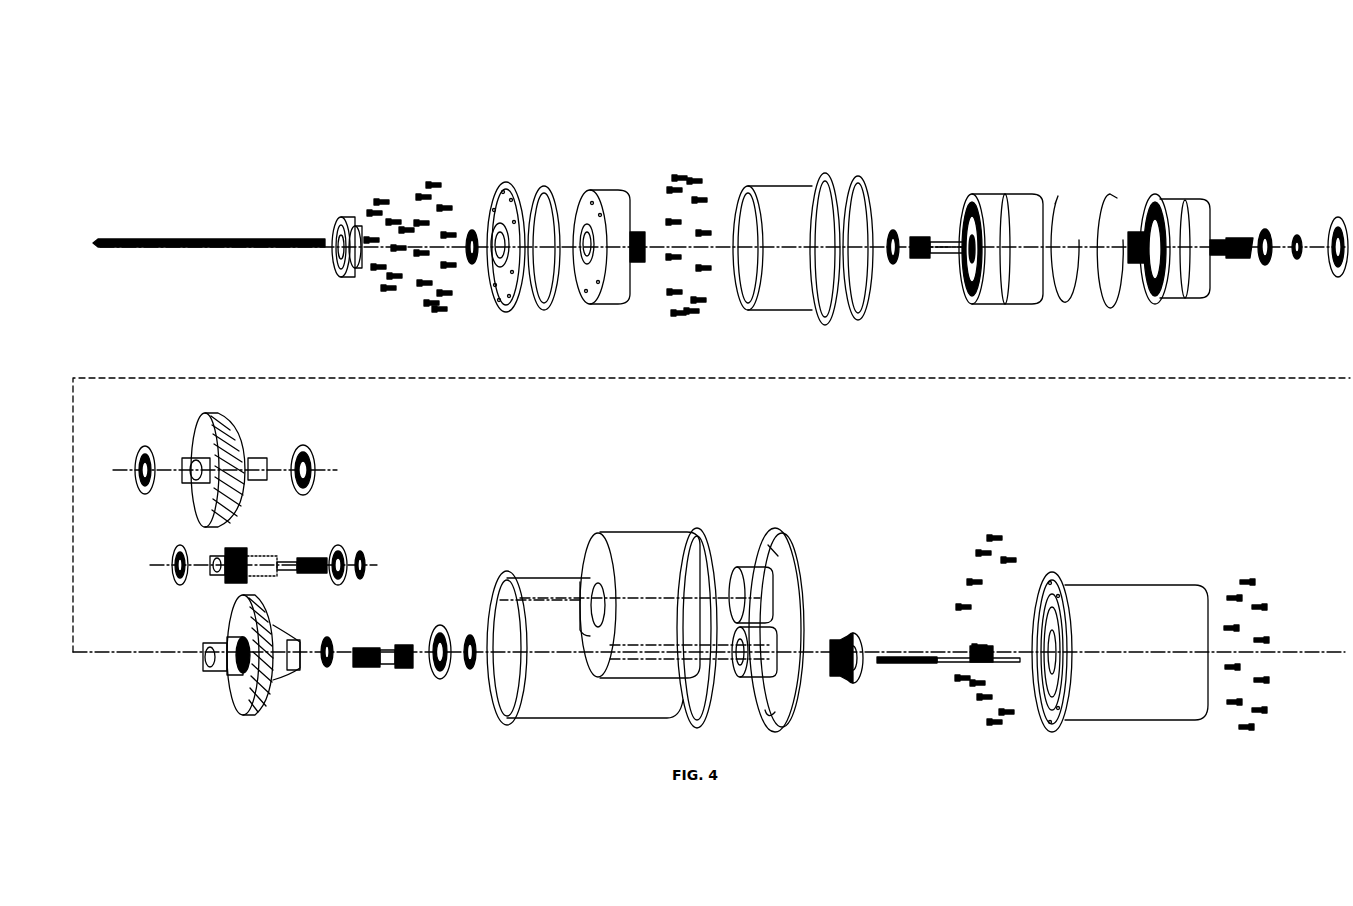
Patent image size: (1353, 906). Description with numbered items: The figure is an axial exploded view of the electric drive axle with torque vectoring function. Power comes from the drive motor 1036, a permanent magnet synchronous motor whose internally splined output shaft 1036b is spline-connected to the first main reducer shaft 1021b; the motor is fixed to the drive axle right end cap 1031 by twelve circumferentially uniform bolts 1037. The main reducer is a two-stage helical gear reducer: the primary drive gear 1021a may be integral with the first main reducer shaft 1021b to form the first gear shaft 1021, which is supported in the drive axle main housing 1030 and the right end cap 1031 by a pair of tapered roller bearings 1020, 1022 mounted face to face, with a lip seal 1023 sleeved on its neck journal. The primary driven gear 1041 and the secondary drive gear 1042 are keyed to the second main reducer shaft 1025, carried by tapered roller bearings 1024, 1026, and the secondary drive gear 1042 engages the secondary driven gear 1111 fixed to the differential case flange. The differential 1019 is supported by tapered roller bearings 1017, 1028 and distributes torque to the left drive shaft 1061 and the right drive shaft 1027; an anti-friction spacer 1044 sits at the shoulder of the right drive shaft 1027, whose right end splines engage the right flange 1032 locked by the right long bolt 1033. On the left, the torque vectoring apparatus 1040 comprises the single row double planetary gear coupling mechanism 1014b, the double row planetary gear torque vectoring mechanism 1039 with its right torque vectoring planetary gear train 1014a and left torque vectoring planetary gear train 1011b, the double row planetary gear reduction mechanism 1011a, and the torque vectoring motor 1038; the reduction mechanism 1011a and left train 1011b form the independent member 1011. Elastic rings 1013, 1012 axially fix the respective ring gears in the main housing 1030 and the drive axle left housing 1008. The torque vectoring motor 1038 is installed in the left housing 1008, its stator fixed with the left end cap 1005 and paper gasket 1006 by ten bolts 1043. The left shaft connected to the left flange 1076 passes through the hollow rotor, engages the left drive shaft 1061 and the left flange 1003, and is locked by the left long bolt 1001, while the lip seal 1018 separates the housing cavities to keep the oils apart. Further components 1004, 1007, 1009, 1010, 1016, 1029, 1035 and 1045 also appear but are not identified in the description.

The left long bolt 1001 is at (228, 240).
The left flange 1003 is at (343, 217).
The screw 1004 is at (421, 256).
The left end cap 1005 is at (498, 183).
The paper gasket 1006 is at (545, 188).
The screws 1007 is at (675, 177).
The drive axle left housing 1008 is at (790, 203).
The sealing ring 1009 is at (855, 174).
The bearing 1010 is at (472, 264).
The independent member 1011 is at (994, 205).
The double row planetary gear reduction mechanism 1011a is at (990, 220).
The left torque vectoring planetary gear train 1011b is at (1027, 207).
The elastic ring 1012 is at (1067, 193).
The elastic ring 1013 is at (1107, 192).
The right torque vectoring planetary gear train 1014a is at (1163, 217).
The single row double planetary gear coupling mechanism 1014b is at (1192, 208).
The bearing 1016 is at (1260, 268).
The tapered roller bearing 1017 is at (1337, 280).
The lip seal 1018 is at (1297, 233).
The differential 1019 is at (267, 683).
The tapered roller bearing 1020 is at (173, 553).
The first gear shaft 1021 is at (268, 540).
The primary drive gear 1021a is at (250, 557).
The first main reducer shaft 1021b is at (268, 557).
The tapered roller bearing 1022 is at (338, 548).
The lip seal 1023 is at (360, 551).
The tapered roller bearing 1024 is at (303, 447).
The second main reducer shaft 1025 is at (187, 460).
The tapered roller bearing 1026 is at (137, 447).
The right drive shaft 1027 is at (382, 672).
The tapered roller bearing 1028 is at (440, 685).
The seal ring 1029 is at (468, 637).
The drive axle main housing 1030 is at (568, 627).
The drive axle right end cap 1031 is at (778, 585).
The right flange 1032 is at (843, 633).
The right long bolt 1033 is at (900, 655).
The screws 1035 is at (968, 578).
The drive motor 1036 is at (1143, 627).
The output shaft 1036b is at (1067, 587).
The bolts 1037 is at (1270, 637).
The torque vectoring motor 1038 is at (613, 215).
The double row planetary gear torque vectoring mechanism 1039 is at (1124, 194).
The torque vectoring apparatus 1040 is at (1195, 93).
The primary driven gear 1041 is at (203, 413).
The secondary drive gear 1042 is at (238, 445).
The bolts 1043 is at (380, 200).
The anti-friction spacer 1044 is at (327, 668).
The fastener 1045 is at (897, 266).
The left drive shaft 1061 is at (1233, 238).
The left shaft connected to the left flange 1076 is at (933, 237).
The secondary driven gear 1111 is at (230, 619).